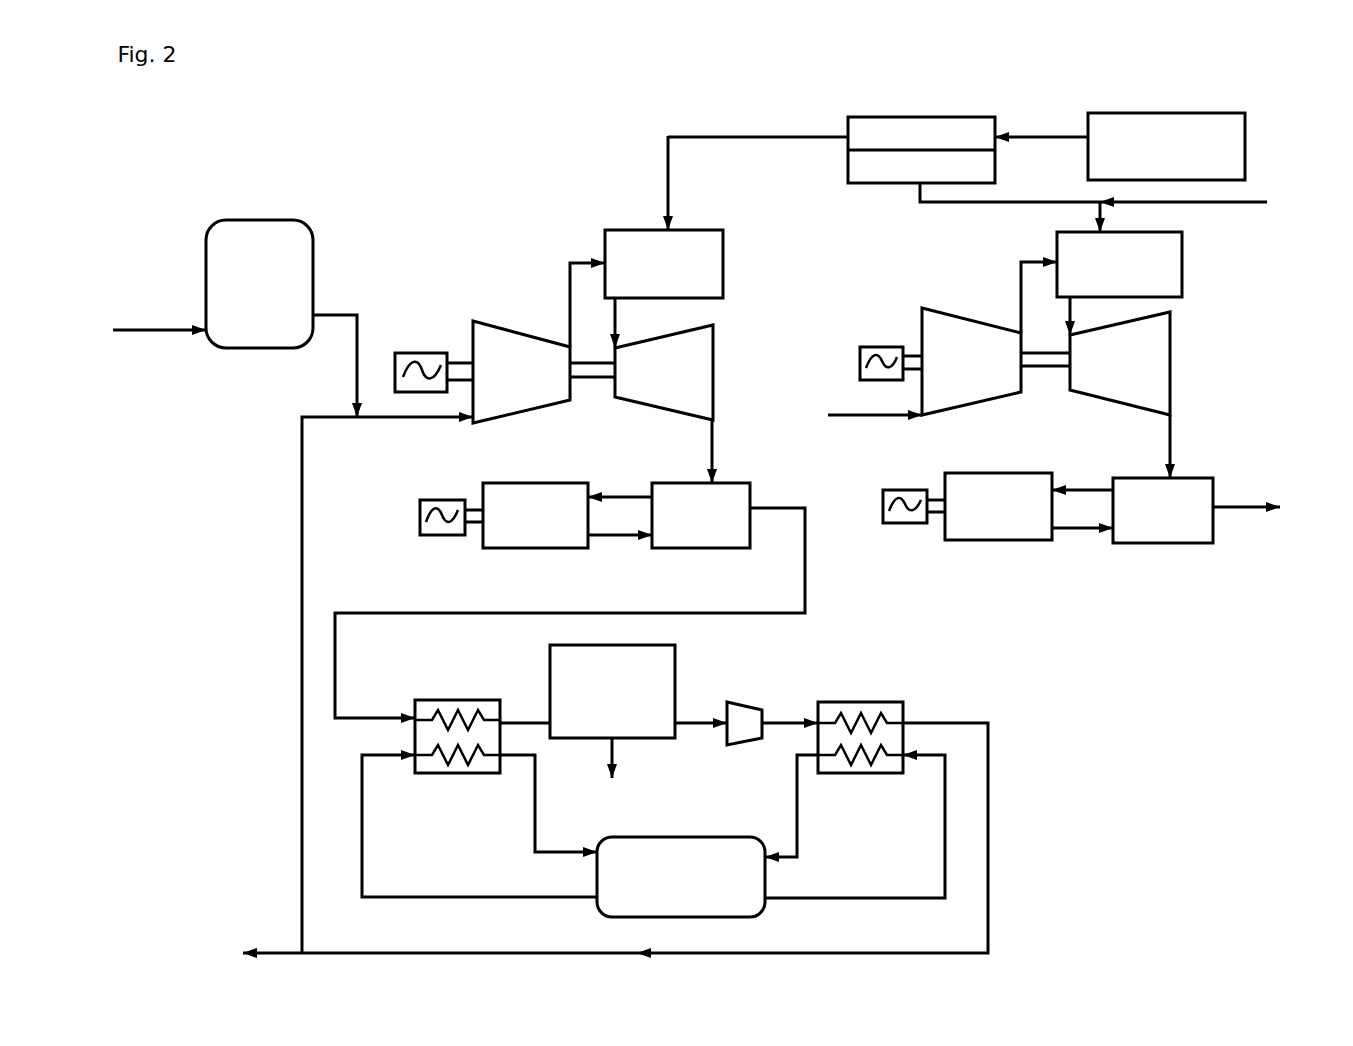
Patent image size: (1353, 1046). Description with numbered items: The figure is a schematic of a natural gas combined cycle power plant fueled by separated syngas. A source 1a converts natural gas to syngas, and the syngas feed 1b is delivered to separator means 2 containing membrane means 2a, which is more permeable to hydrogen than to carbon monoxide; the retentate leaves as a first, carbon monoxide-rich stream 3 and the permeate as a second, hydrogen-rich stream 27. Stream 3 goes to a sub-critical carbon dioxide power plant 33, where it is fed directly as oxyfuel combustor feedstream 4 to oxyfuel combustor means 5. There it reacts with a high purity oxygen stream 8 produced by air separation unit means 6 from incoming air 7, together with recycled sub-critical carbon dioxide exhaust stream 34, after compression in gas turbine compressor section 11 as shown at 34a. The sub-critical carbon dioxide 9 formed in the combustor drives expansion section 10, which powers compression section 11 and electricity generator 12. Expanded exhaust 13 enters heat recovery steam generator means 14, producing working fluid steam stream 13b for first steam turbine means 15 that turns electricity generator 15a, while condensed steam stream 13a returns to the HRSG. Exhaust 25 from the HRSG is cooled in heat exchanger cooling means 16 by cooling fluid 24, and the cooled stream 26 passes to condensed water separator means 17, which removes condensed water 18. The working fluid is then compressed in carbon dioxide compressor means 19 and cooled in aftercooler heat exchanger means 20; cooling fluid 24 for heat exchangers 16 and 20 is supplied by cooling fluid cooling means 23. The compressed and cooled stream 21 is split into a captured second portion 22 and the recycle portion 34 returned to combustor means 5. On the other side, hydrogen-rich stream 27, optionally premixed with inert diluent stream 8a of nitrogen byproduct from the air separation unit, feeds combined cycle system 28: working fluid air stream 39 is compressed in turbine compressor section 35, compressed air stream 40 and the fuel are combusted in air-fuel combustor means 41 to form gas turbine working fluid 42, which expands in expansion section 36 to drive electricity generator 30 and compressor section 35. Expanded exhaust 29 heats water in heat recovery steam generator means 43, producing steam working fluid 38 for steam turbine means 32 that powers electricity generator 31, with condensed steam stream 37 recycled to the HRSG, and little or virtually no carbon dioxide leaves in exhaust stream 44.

The syngas source 1a is at (1157, 108).
The syngas feed 1b is at (1025, 136).
The separator means 2 is at (885, 120).
The membrane means 2a is at (978, 148).
The CO-rich stream 3 is at (755, 136).
The oxyfuel combustor feedstream 4 is at (670, 190).
The oxyfuel combustor means 5 is at (725, 262).
The air separation unit means 6 is at (270, 222).
The air inlet line 7 is at (160, 328).
The high purity oxygen stream 8 is at (333, 315).
The inert diluent stream 8a is at (1237, 205).
The sub-critical carbon dioxide 9 is at (620, 318).
The expansion section 10 is at (727, 363).
The gas turbine compressor section 11 is at (500, 327).
The electricity generator 12 is at (430, 352).
The expanded sub-critical carbon dioxide exhaust 13 is at (713, 445).
The condensed steam stream 13a is at (615, 538).
The working fluid steam stream 13b is at (620, 492).
The heat recovery steam generator means 14 is at (708, 550).
The first steam turbine means 15 is at (520, 550).
The electricity generator 15a is at (413, 520).
The heat exchanger cooling means 16 is at (440, 698).
The condensed water separator means 17 is at (545, 648).
The condensed water 18 is at (605, 755).
The carbon dioxide compressor means 19 is at (747, 705).
The aftercooler heat exchanger means 20 is at (875, 700).
The compressed and cooled sub-critical carbon dioxide stream 21 is at (990, 858).
The captured portion 22 is at (272, 948).
The cooling fluid cooling means 23 is at (677, 835).
The cooling fluid 24 is at (485, 897).
The sub-critical carbon dioxide exhaust 25 is at (365, 715).
The cooled sub-critical carbon dioxide stream 26 is at (535, 722).
The hydrogen-rich gas stream 27 is at (985, 205).
The combined cycle system 28 is at (1300, 185).
The expanded exhaust 29 is at (1173, 442).
The electricity generator 30 is at (878, 345).
The electricity generator 31 is at (912, 490).
The steam turbine means 32 is at (990, 545).
The sub-critical carbon dioxide power plant 33 is at (197, 225).
The sub-critical carbon dioxide recycle stream 34 is at (300, 752).
The compressed oxygen and carbon dioxide stream 34a is at (577, 257).
The turbine compressor section 35 is at (965, 408).
The expansion section 36 is at (1115, 405).
The condensed steam stream 37 is at (1077, 533).
The steam stream working fluid 38 is at (1097, 488).
The working fluid air stream 39 is at (861, 417).
The compressed air stream 40 is at (1015, 296).
The air-fuel combustor means 41 is at (1183, 277).
The gas turbine working fluid 42 is at (1074, 308).
The heat recovery steam generator means 43 is at (1155, 545).
The exhaust stream 44 is at (1248, 510).